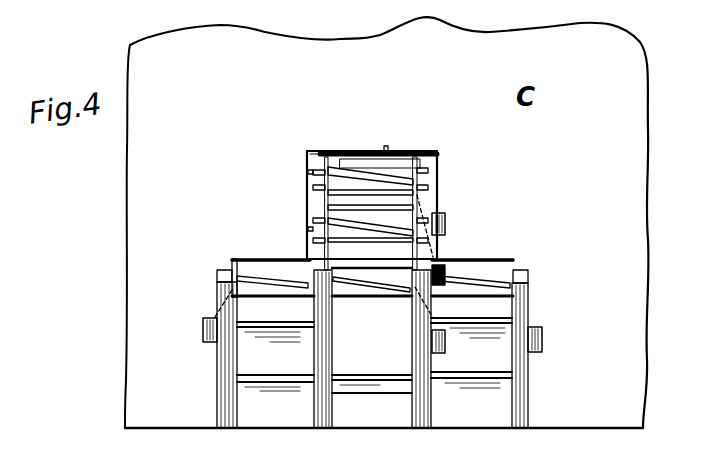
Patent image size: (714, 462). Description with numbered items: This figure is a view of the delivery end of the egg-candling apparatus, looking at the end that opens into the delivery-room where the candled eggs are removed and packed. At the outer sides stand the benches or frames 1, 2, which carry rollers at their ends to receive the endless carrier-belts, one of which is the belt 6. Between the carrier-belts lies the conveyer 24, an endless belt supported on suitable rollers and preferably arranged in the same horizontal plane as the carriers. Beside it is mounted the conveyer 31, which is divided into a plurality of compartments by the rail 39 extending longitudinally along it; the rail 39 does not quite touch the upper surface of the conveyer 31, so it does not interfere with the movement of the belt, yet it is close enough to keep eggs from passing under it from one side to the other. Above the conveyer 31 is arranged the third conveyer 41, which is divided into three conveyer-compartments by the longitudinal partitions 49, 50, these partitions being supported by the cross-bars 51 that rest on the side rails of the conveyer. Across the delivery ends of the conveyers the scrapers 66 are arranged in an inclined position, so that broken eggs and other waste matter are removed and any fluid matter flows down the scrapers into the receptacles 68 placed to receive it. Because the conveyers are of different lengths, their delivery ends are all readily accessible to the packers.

The bench or frame 1 is at (521, 392).
The bench or frame 2 is at (237, 390).
The endless belt 6 is at (299, 287).
The conveyer 24 is at (374, 287).
The conveyer 31 is at (388, 236).
The rail 39 is at (372, 210).
The third conveyer 41 is at (400, 158).
The longitudinal partition 49 is at (381, 157).
The longitudinal partition 50 is at (463, 288).
The cross-bar 51 is at (354, 164).
The scraper 66 is at (342, 172).
The receptacle 68 is at (447, 220).